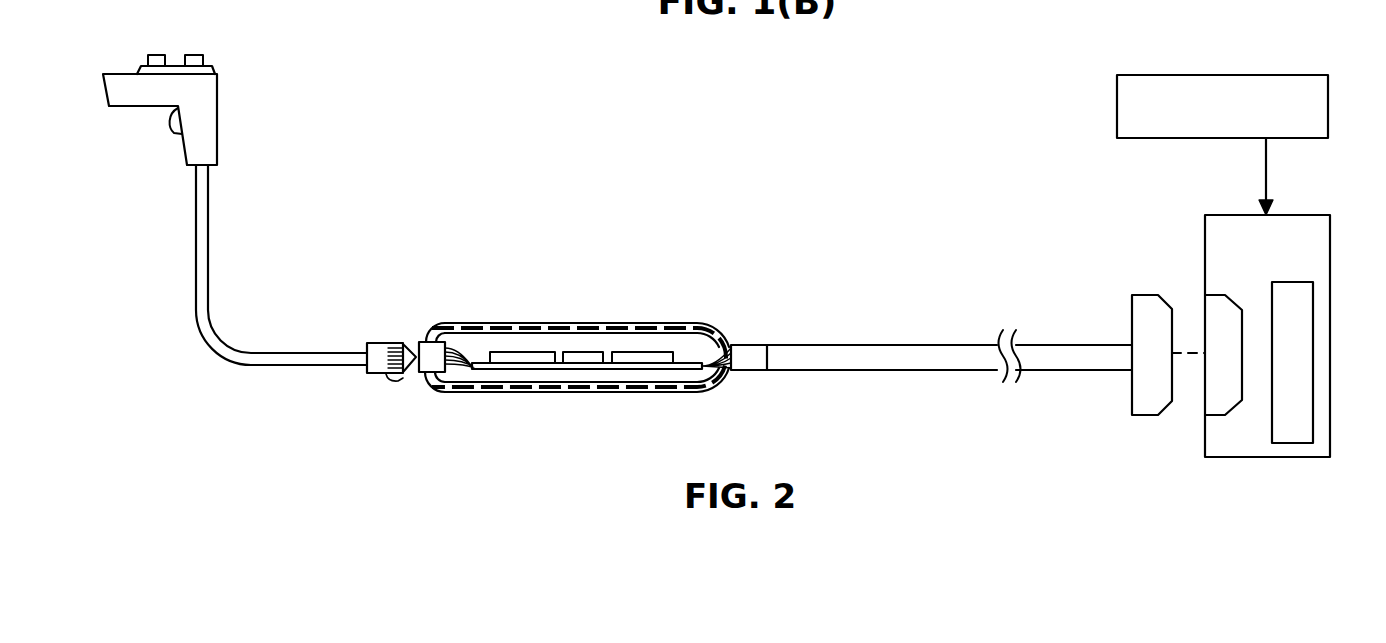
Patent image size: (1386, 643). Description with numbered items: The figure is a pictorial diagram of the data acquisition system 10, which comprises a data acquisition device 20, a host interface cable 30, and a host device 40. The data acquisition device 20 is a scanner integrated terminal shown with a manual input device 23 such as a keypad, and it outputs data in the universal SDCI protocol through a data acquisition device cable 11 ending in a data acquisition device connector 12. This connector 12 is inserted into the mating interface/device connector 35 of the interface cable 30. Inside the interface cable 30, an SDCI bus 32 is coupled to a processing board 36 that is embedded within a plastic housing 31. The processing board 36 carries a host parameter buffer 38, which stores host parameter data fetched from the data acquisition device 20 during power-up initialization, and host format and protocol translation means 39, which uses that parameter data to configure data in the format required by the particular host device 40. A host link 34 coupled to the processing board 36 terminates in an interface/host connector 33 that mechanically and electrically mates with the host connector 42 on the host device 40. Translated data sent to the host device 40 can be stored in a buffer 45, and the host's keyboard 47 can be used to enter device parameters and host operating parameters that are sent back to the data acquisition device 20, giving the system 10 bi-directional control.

The data acquisition system 10 is at (810, 192).
The data acquisition device cable 11 is at (205, 288).
The data acquisition device connector 12 is at (378, 375).
The data acquisition device 20 is at (195, 132).
The manual input device 23 is at (180, 62).
The host interface cable 30 is at (677, 396).
The plastic housing 31 is at (535, 392).
The SDCI bus 32 is at (471, 364).
The interface/host connector 33 is at (1135, 316).
The host link 34 is at (880, 343).
The interface/device connector 35 is at (414, 355).
The processing board 36 is at (683, 360).
The host parameter buffer 38 is at (542, 352).
The host format and protocol translation means 39 is at (640, 352).
The host device 40 is at (1205, 232).
The host connector 42 is at (1218, 393).
The buffer 45 is at (1307, 345).
The keyboard 47 is at (1117, 103).